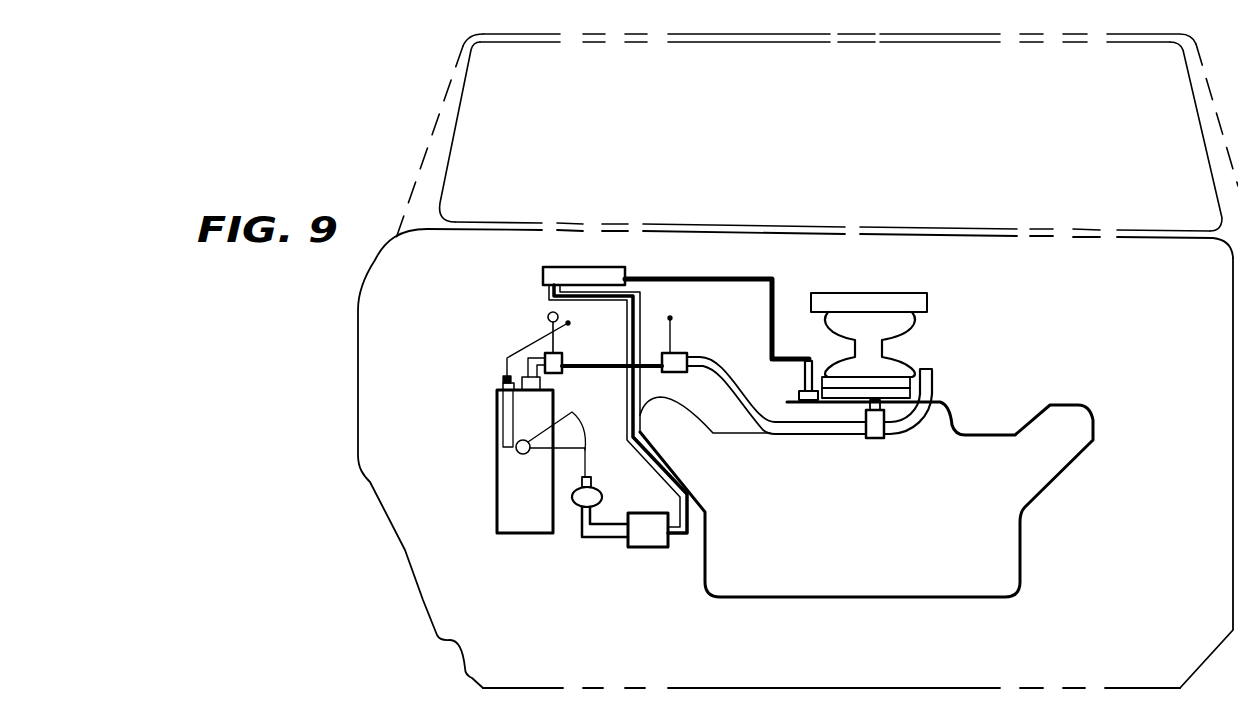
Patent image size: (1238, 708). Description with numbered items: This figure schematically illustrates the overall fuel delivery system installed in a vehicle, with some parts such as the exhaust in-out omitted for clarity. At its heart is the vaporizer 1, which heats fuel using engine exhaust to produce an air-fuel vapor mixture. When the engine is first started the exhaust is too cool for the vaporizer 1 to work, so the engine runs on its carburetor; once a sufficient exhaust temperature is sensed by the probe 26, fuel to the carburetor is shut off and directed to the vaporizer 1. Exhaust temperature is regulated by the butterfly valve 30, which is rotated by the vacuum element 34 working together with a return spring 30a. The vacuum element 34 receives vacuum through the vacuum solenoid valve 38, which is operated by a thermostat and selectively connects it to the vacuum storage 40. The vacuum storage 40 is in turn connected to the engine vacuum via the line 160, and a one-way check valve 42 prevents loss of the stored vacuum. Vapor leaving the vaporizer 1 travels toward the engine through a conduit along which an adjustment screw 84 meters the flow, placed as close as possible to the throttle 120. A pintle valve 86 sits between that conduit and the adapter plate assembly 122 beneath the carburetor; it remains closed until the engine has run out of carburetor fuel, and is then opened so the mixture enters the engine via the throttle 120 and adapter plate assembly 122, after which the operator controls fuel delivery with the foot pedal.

The vaporizer 1 is at (475, 514).
The probe 26 is at (502, 383).
The butterfly valve 30 is at (516, 449).
The return spring 30a is at (541, 426).
The vacuum element 34 is at (572, 497).
The vacuum solenoid valve 38 is at (644, 549).
The vacuum storage 40 is at (548, 274).
The one-way check valve 42 is at (770, 322).
The adjustment screw 84 is at (867, 461).
The pintle valve 86 is at (787, 334).
The throttle 120 is at (944, 389).
The adapter plate assembly 122 is at (869, 324).
The line 160 is at (787, 360).